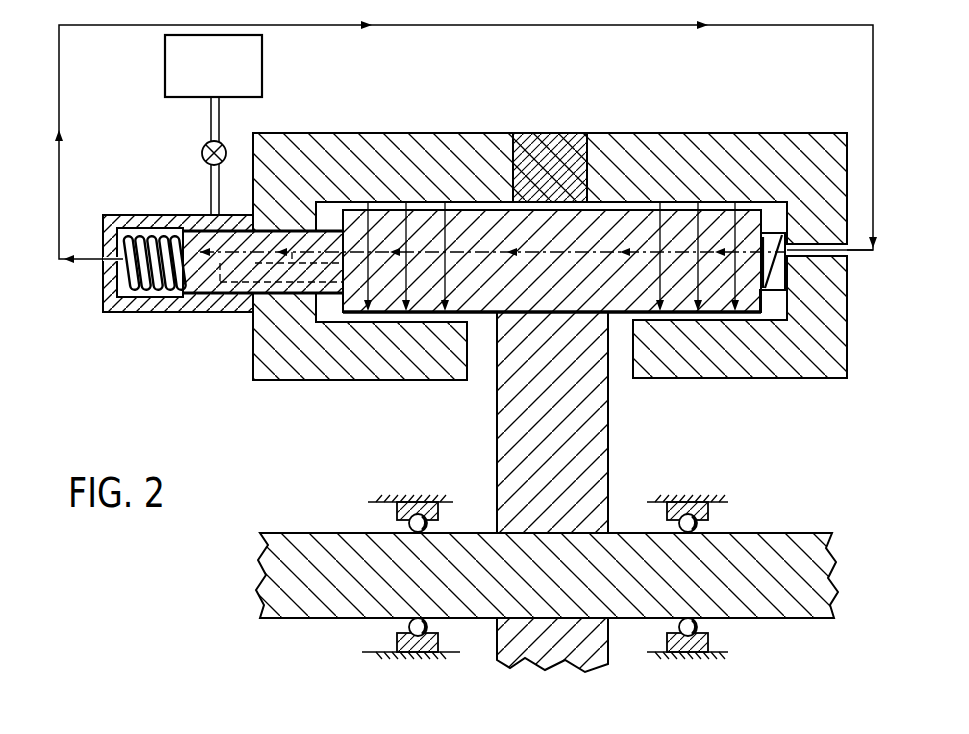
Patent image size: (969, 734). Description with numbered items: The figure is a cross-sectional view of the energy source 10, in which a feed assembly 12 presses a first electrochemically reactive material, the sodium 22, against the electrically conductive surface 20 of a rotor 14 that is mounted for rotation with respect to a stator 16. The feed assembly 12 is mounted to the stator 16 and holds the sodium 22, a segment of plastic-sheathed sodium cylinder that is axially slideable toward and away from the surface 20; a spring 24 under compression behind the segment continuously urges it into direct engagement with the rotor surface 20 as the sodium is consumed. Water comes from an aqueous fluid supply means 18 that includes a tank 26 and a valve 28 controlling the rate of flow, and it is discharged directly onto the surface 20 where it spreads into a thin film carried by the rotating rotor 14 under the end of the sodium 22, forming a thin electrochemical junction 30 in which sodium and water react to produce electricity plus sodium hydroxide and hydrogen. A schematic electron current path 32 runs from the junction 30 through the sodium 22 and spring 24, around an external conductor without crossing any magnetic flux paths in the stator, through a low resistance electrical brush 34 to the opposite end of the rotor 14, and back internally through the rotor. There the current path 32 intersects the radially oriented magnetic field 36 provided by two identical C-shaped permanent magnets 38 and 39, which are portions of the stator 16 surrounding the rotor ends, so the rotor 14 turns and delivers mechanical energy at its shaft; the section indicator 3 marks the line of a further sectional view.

The energy source 10 is at (752, 115).
The feed assembly 12 is at (140, 211).
The rotor 14 is at (474, 288).
The stator 16 is at (466, 120).
The aqueous fluid supply means 18 is at (211, 186).
The electrically conductive surface area 20 is at (340, 318).
The sodium 22 is at (197, 312).
The spring 24 is at (131, 297).
The tank 26 is at (165, 68).
The valve 28 is at (202, 154).
The electrochemical junction 30 is at (333, 307).
The electron current path 32 is at (568, 26).
The electrical brush 34 is at (787, 276).
The magnetic field 36 is at (712, 328).
The permanent magnet 38 is at (655, 133).
The permanent magnet 39 is at (390, 133).
The section line of FIG. 3 is at (386, 278).